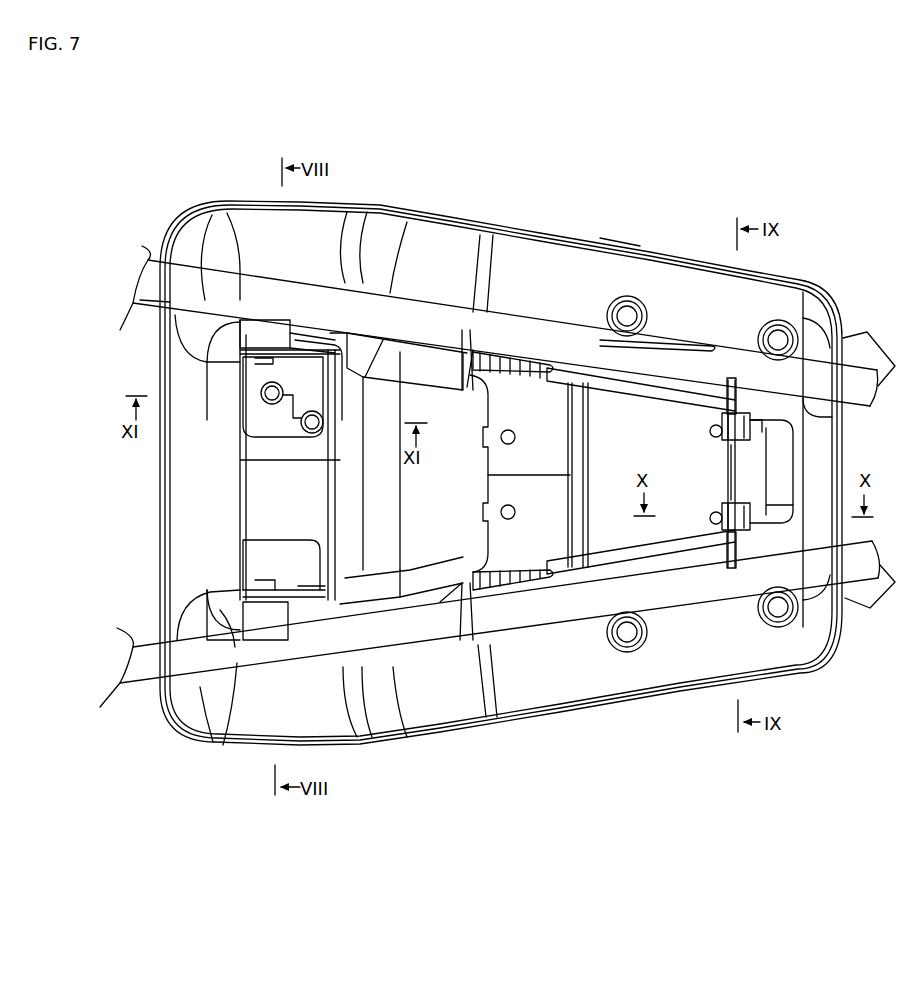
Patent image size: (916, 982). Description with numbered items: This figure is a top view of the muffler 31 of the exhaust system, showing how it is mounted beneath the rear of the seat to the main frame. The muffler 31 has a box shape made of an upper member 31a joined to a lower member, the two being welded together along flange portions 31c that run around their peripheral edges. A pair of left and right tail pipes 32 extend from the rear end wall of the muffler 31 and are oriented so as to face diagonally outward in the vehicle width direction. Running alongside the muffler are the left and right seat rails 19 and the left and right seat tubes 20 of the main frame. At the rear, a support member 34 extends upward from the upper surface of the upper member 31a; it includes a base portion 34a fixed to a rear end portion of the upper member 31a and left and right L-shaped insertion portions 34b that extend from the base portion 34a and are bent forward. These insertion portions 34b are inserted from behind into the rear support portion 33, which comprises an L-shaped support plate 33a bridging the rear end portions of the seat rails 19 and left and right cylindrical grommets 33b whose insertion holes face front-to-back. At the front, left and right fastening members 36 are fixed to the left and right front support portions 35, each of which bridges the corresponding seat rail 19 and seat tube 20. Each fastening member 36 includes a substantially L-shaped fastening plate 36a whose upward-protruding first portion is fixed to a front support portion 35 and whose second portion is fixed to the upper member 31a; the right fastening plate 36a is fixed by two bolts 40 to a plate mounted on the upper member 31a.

The seat rail 19 is at (246, 262).
The seat tube 20 is at (660, 333).
The muffler 31 is at (586, 234).
The upper member 31a is at (533, 250).
The flange portion 31c is at (622, 250).
The tail pipe 32 is at (857, 337).
The rear support portion 33 is at (725, 474).
The support plate 33a is at (724, 467).
The grommet 33b is at (720, 407).
The support member 34 is at (755, 416).
The base portion 34a is at (785, 468).
The insertion portion 34b is at (710, 431).
The front support portion 35 is at (297, 330).
The fastening member 36 is at (236, 383).
The fastening plate 36a is at (303, 360).
The bolt 40 is at (311, 434).